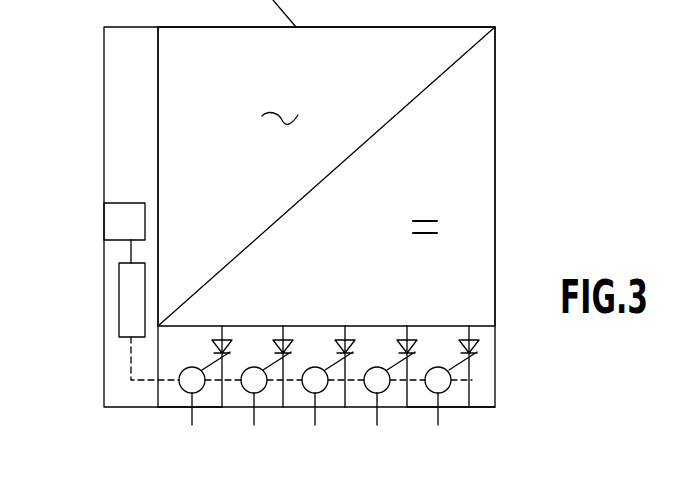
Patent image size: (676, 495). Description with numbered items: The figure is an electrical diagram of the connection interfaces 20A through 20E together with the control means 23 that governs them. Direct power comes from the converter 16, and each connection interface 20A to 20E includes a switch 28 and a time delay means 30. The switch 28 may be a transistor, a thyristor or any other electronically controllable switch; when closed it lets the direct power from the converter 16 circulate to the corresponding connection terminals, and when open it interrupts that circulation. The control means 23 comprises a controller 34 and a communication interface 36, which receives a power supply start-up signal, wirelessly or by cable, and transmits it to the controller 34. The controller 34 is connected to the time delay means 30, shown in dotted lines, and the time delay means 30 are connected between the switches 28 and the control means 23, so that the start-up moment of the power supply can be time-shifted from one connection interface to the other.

The converter 16 is at (510, 128).
The control means 23 is at (95, 297).
The communication interface 36 is at (122, 222).
The controller 34 is at (130, 314).
The switch 28 is at (233, 342).
The time delay means 30 is at (192, 425).
The connection interface 20A is at (213, 420).
The connection interface 20E is at (466, 415).